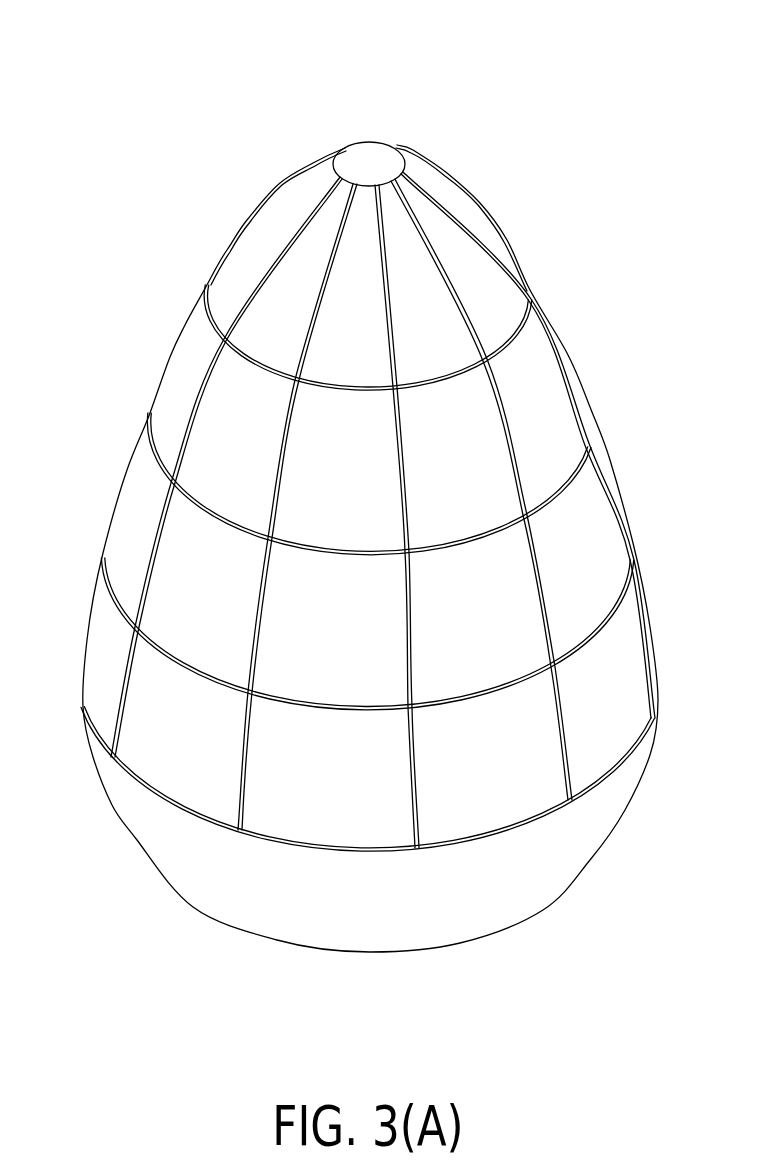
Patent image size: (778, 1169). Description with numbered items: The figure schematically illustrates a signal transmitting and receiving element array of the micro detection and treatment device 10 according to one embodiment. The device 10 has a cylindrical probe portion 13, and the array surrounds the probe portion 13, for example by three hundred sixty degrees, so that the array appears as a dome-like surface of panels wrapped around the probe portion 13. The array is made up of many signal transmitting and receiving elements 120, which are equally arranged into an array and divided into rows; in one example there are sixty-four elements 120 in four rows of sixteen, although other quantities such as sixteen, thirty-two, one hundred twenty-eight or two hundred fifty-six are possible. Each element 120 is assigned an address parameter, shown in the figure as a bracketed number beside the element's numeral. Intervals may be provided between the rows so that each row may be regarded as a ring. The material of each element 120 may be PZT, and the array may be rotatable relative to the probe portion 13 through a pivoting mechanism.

The micro detection and treatment device 10 is at (363, 50).
The probe portion 13 is at (149, 416).
The signal transmitting and receiving element 120 is at (368, 499).